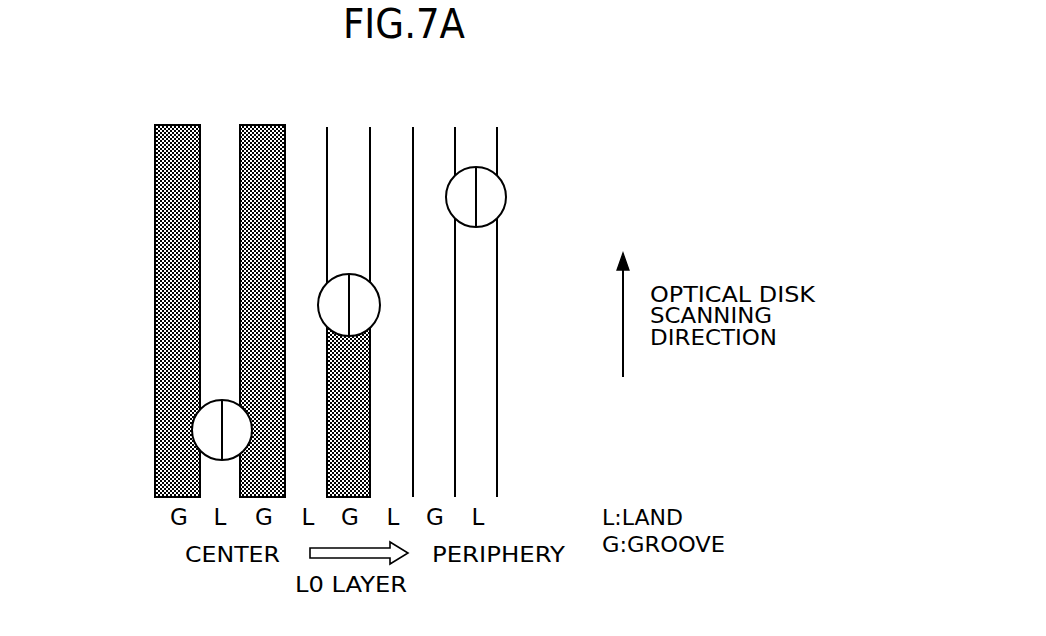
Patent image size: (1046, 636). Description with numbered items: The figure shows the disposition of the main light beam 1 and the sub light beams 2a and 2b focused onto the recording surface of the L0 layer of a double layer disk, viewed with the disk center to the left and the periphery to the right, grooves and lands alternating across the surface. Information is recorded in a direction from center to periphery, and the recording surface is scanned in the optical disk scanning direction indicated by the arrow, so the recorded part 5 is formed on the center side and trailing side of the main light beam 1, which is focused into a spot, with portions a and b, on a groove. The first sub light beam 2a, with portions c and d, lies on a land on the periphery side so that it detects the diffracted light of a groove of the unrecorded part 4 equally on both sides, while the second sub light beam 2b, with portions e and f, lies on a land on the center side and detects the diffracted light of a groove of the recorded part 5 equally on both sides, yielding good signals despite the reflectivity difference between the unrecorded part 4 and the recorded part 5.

The main light beam 1 is at (381, 305).
The first sub light beam 2a is at (506, 197).
The second sub light beam 2b is at (194, 416).
The unrecorded part 4 is at (355, 147).
The recorded part 5 is at (355, 417).